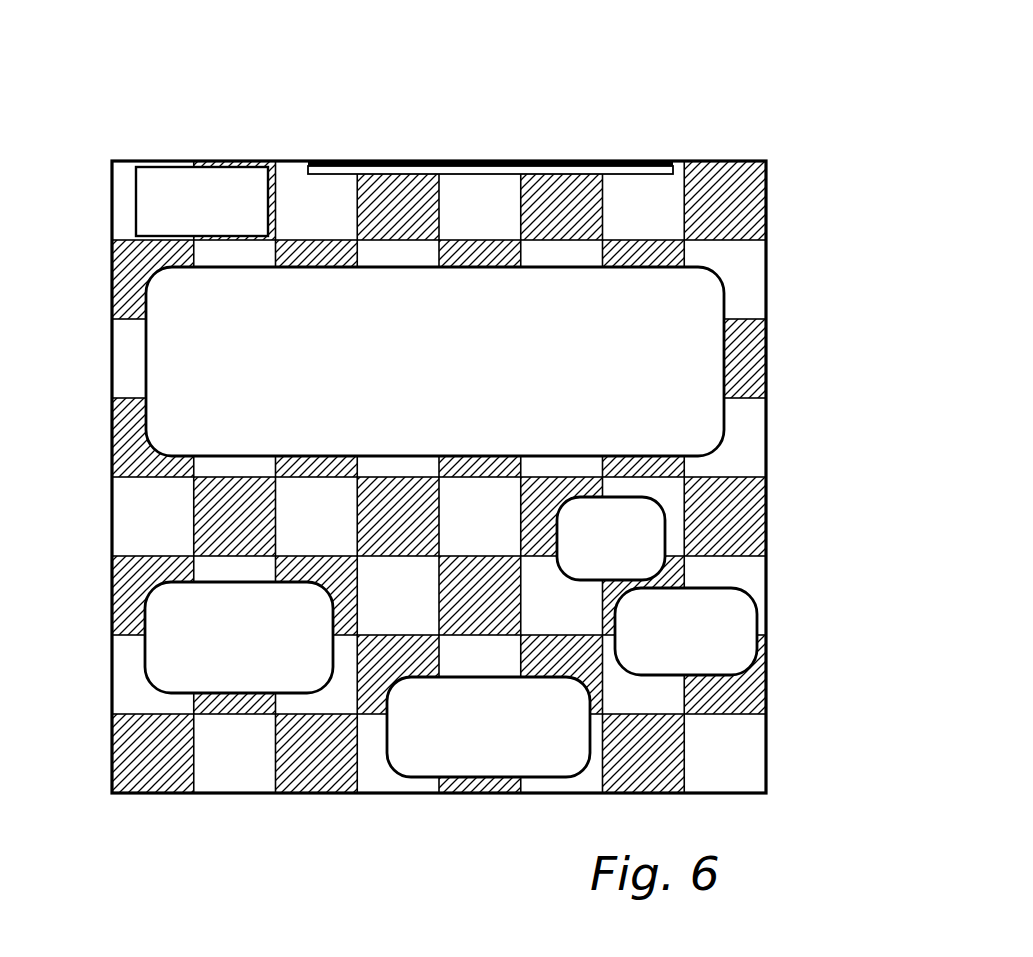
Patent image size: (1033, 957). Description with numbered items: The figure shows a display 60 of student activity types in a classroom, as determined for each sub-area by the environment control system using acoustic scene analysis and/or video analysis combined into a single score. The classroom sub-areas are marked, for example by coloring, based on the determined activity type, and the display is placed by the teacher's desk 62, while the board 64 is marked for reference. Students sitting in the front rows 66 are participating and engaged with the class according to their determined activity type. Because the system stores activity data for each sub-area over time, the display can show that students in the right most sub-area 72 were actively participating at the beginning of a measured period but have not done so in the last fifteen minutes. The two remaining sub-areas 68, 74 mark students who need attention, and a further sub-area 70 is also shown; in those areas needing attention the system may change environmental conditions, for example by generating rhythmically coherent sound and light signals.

The checkerboard substrate assembly 60 is at (660, 94).
The teacher's desk 62 is at (213, 187).
The board 64 is at (463, 170).
The front rows 66 is at (158, 371).
The sub-area 68 is at (158, 644).
The rounded rectangular region 70 is at (447, 752).
The right most sub-area 72 is at (731, 651).
The sub-area 74 is at (634, 543).